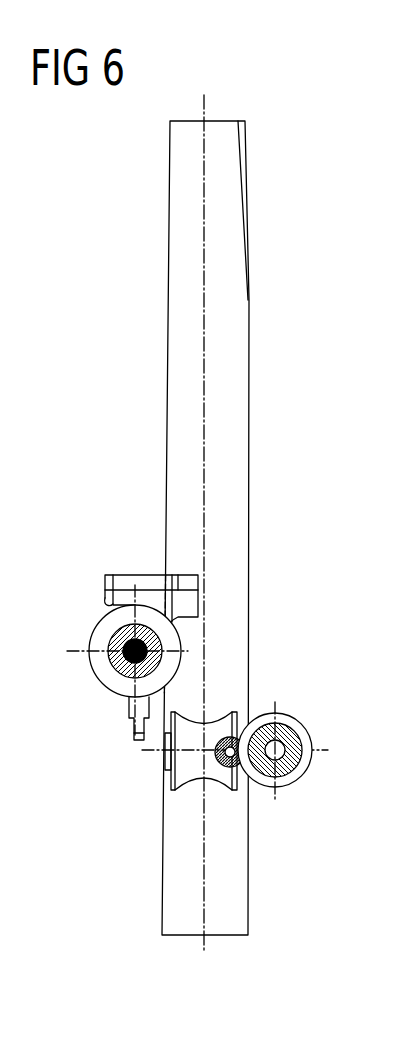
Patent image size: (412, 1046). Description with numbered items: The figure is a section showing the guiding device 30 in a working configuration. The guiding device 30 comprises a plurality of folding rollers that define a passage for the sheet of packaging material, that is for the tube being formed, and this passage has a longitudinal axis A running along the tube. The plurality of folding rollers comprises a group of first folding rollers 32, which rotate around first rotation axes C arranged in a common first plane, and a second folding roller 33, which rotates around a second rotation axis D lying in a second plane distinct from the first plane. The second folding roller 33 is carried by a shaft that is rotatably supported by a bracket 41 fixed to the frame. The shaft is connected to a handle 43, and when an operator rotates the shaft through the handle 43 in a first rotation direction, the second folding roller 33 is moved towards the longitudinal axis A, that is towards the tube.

The guiding device 30 is at (88, 496).
The bracket 41 is at (145, 583).
The second folding roller 33 is at (102, 627).
The handle 43 is at (135, 732).
The first folding rollers 32 is at (292, 720).
The longitudinal axis A is at (205, 112).
The first rotation axes C is at (327, 748).
The second rotation axis D is at (131, 650).